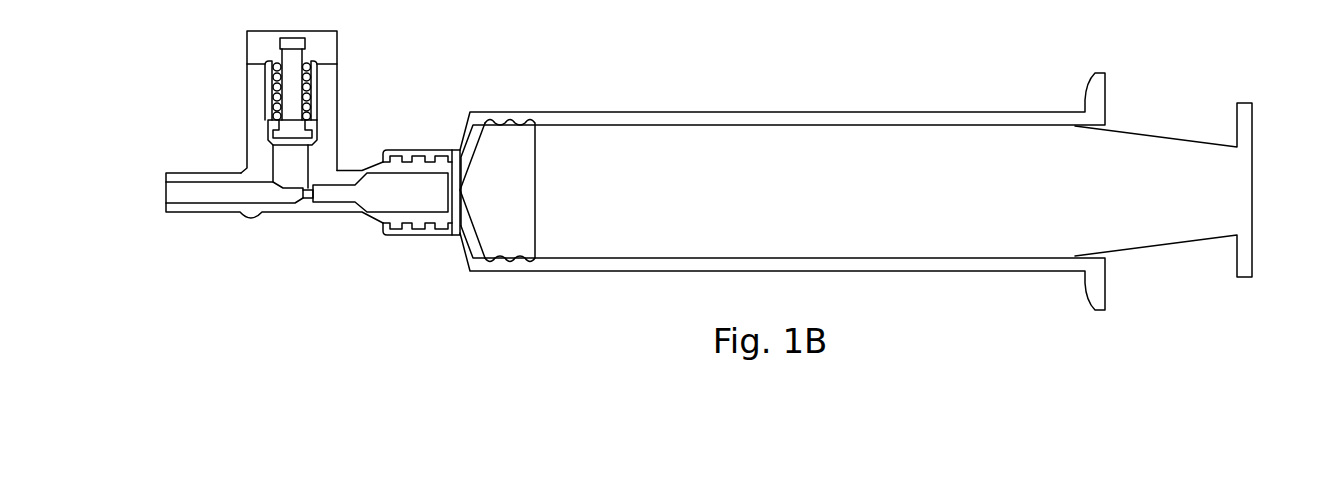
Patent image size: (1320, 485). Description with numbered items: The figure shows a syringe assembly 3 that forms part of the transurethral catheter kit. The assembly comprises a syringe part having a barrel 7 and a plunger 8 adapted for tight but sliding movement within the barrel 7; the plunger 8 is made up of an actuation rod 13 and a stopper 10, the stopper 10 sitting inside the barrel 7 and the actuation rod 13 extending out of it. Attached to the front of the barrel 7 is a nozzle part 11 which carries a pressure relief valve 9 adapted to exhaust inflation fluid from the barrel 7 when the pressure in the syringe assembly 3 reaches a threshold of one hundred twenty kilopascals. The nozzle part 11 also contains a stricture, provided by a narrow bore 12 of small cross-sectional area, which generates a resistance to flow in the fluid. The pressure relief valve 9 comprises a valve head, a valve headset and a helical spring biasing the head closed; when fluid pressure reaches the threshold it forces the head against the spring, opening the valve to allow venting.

The syringe assembly 3 is at (856, 184).
The barrel 7 is at (893, 112).
The plunger 8 is at (607, 230).
The pressure relief valve 9 is at (332, 113).
The stopper 10 is at (512, 207).
The nozzle part 11 is at (313, 180).
The narrow bore 12 is at (308, 197).
The actuation rod 13 is at (1147, 207).